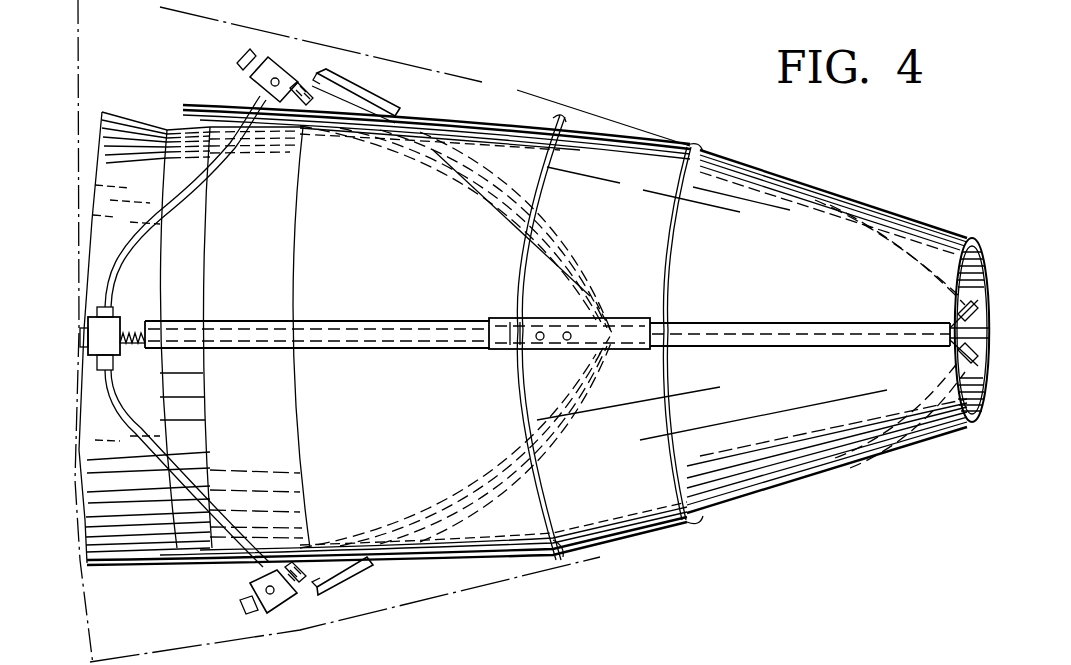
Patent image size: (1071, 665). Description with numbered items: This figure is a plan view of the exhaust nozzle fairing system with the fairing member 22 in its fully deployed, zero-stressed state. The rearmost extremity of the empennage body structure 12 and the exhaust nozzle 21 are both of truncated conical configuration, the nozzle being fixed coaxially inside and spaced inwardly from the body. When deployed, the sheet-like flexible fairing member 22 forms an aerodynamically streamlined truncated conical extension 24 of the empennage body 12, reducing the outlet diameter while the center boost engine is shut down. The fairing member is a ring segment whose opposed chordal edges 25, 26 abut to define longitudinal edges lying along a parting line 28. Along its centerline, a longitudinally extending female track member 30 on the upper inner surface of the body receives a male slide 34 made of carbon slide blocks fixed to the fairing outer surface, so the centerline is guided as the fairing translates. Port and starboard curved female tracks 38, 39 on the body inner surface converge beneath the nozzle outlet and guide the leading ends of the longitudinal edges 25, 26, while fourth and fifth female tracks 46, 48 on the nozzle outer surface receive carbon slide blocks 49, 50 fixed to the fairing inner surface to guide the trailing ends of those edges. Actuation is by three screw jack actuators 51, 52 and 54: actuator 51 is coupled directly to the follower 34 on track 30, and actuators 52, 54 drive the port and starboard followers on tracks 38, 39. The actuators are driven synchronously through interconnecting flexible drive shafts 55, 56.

The empennage body structure 12 is at (618, 100).
The exhaust nozzle 21 is at (364, 416).
The fairing member 22 is at (905, 226).
The truncated conical extension 24 is at (887, 453).
The chordal edge 25 is at (960, 323).
The chordal edge 26 is at (958, 348).
The parting line 28 is at (745, 322).
The track member 30 is at (392, 320).
The male slide 34 is at (806, 326).
The port curved female track 38 is at (340, 587).
The starboard curved female track 39 is at (357, 100).
The fourth female track 46 is at (495, 551).
The fifth female track 48 is at (490, 123).
The carbon slide blocks 49 is at (888, 421).
The carbon slide blocks 50 is at (882, 233).
The screw jack actuator 51 is at (112, 327).
The screw jack actuator 52 is at (248, 593).
The screw jack actuator 54 is at (270, 80).
The flexible drive shaft 55 is at (187, 463).
The flexible drive shaft 56 is at (157, 221).